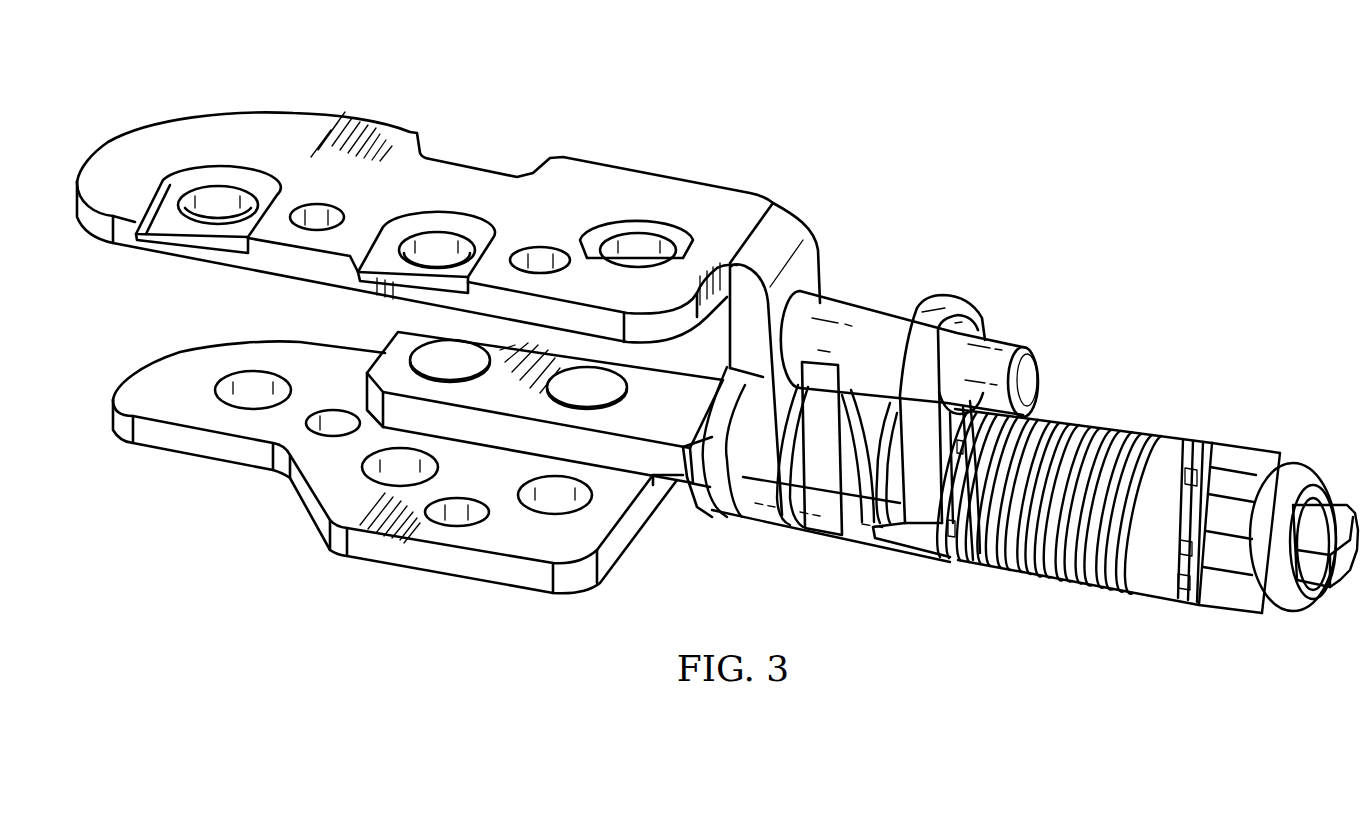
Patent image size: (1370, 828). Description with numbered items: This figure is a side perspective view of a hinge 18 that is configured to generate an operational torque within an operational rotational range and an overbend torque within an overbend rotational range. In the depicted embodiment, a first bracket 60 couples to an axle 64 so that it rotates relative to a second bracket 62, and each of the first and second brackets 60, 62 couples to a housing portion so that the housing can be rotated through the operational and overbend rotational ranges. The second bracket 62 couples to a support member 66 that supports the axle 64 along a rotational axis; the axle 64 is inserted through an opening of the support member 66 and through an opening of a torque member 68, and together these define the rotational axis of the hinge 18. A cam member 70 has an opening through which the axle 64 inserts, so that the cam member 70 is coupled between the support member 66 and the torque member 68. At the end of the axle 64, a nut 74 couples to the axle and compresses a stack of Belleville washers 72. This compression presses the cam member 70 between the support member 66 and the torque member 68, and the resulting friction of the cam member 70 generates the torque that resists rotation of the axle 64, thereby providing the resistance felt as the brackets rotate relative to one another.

The hinge 18 is at (946, 127).
The first bracket 60 is at (183, 368).
The second bracket 62 is at (178, 135).
The axle 64 is at (393, 350).
The support member 66 is at (862, 310).
The torque member 68 is at (953, 296).
The cam member 70 is at (853, 510).
The Belleville washers 72 is at (1137, 424).
The nut 74 is at (1260, 448).